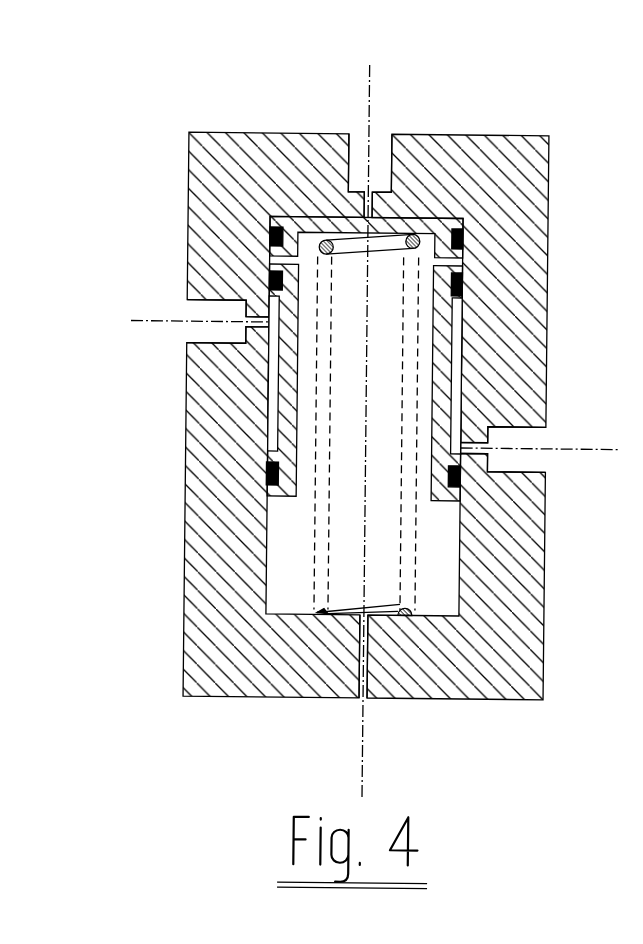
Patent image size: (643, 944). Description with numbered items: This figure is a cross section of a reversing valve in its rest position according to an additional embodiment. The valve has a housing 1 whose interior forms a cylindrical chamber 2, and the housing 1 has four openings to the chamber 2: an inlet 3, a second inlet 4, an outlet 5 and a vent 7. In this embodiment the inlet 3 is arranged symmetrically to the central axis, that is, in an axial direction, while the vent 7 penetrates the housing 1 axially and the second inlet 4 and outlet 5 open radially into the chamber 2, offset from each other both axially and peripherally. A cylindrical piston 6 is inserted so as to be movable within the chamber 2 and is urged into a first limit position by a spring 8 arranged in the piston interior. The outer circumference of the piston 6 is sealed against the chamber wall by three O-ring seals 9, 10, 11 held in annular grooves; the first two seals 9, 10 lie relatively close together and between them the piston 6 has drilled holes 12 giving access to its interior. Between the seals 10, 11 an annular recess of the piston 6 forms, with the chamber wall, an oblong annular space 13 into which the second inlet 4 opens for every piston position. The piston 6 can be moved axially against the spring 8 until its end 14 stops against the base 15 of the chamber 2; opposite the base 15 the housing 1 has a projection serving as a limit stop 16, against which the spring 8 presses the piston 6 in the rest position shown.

The housing 1 is at (469, 152).
The cylindrical chamber 2 is at (437, 544).
The inlet 3 is at (349, 147).
The second inlet 4 is at (522, 440).
The outlet 5 is at (169, 332).
The cylindrical piston 6 is at (268, 416).
The vent 7 is at (374, 700).
The spring 8 is at (318, 540).
The seal 9 is at (458, 237).
The seal 10 is at (459, 284).
The seal 11 is at (461, 476).
The drilled holes 12 is at (270, 260).
The annular space 13 is at (455, 364).
The end of the piston 14 is at (281, 501).
The base of the chamber 15 is at (290, 611).
The limit stop 16 is at (270, 218).